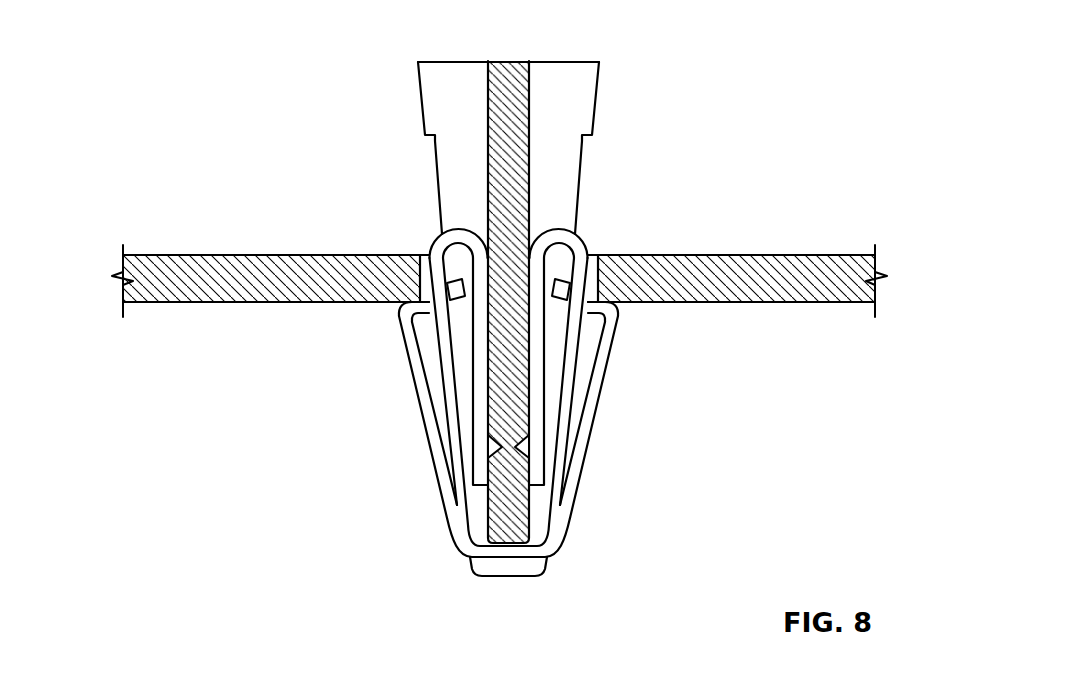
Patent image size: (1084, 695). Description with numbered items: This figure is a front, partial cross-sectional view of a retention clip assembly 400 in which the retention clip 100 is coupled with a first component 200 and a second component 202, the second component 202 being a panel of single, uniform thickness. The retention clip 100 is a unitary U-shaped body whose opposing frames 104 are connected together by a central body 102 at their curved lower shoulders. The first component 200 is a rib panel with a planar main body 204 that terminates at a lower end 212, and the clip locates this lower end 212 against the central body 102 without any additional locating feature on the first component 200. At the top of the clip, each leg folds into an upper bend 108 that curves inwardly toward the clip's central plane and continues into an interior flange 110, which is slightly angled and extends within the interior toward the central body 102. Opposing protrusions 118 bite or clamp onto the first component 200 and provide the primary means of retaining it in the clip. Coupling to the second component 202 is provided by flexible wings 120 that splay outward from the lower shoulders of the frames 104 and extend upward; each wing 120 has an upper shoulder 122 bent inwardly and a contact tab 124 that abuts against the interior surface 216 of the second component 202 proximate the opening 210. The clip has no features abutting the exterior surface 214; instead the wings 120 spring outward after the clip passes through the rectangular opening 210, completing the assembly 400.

The retention clip 100 is at (509, 398).
The central body 102 is at (520, 557).
The opposing frames 104 is at (509, 459).
The upper bend 108 is at (437, 236).
The interior flanges 110 is at (448, 387).
The protrusions 118 is at (500, 446).
The flexible wings 120 is at (408, 365).
The upper shoulders 122 is at (395, 321).
The contact tabs 124 is at (424, 290).
The first component 200 is at (495, 277).
The second component 202 is at (499, 281).
The planar main body 204 is at (497, 175).
The opening 210 is at (601, 250).
The lower end 212 is at (500, 522).
The exterior surface 214 is at (198, 254).
The interior surface 216 is at (217, 303).
The assembly 400 is at (680, 113).